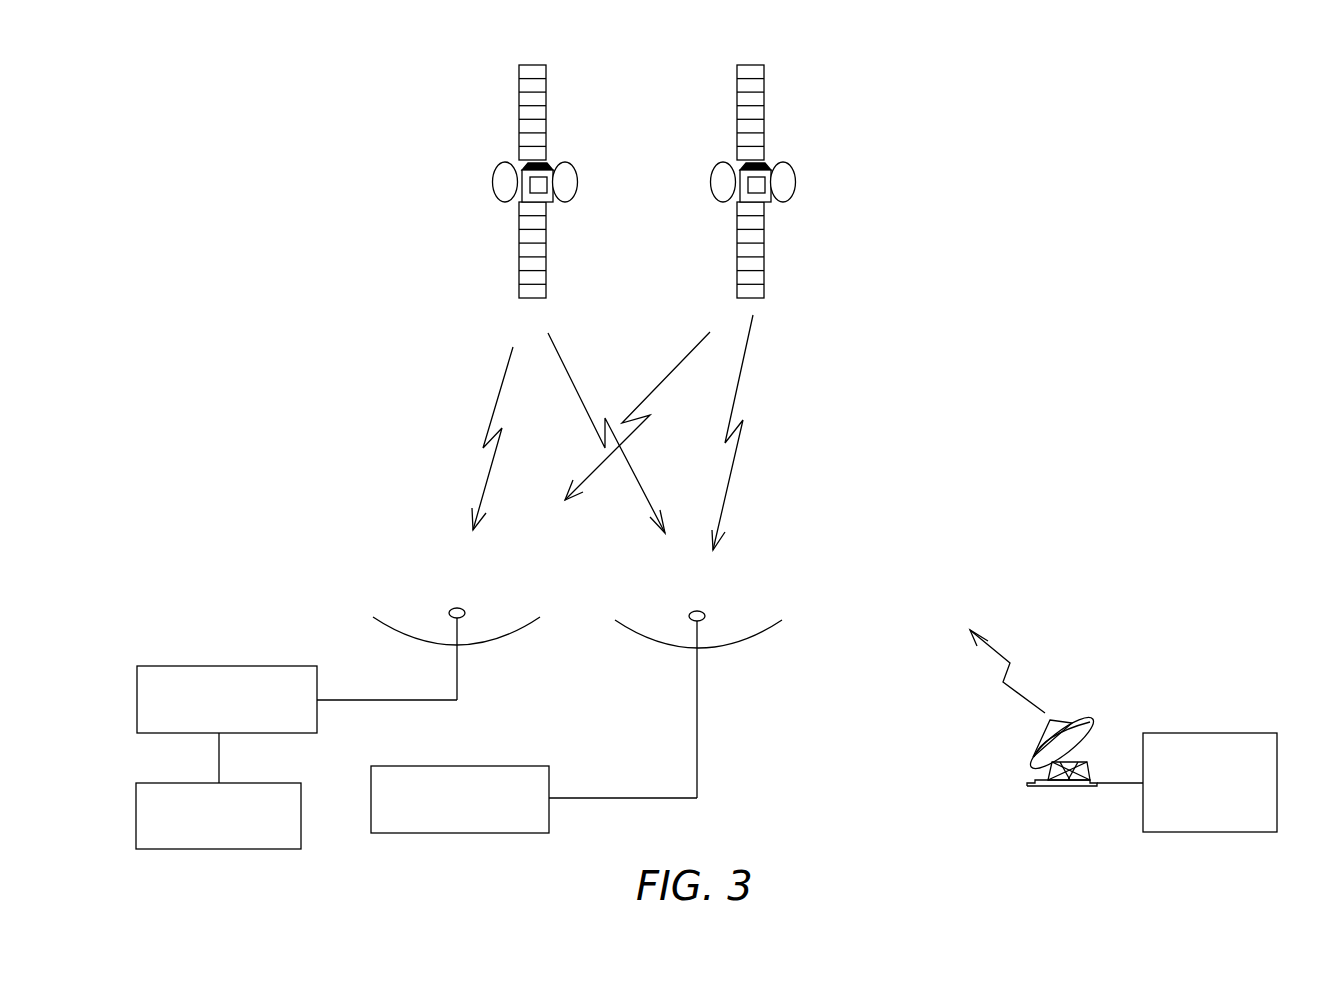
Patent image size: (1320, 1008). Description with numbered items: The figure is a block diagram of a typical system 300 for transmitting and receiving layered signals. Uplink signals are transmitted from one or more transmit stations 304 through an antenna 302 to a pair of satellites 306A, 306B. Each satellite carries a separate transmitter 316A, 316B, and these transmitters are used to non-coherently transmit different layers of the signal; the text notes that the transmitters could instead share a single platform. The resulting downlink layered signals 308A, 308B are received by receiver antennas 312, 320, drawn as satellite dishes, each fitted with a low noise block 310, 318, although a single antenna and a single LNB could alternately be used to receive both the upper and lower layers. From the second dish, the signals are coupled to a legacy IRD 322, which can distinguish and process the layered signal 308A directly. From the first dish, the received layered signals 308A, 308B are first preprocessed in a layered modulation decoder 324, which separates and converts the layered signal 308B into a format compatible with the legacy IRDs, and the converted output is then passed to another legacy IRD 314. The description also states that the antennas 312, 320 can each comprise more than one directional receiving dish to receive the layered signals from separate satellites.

The system 300 is at (1045, 72).
The antenna 302 is at (1067, 723).
The transmit station 304 is at (1208, 732).
The satellite 306A is at (503, 162).
The satellite 306B is at (795, 172).
The layered signal 308A is at (548, 335).
The layered signal 308B is at (753, 318).
The low noise block 310 is at (458, 608).
The receiver antenna 312 is at (390, 627).
The legacy IRD 314 is at (247, 850).
The transmitter 316A is at (540, 178).
The transmitter 316B is at (757, 180).
The low noise block 318 is at (703, 612).
The receiver antenna 320 is at (713, 648).
The legacy IRD 322 is at (485, 833).
The layered modulation decoder 324 is at (170, 733).